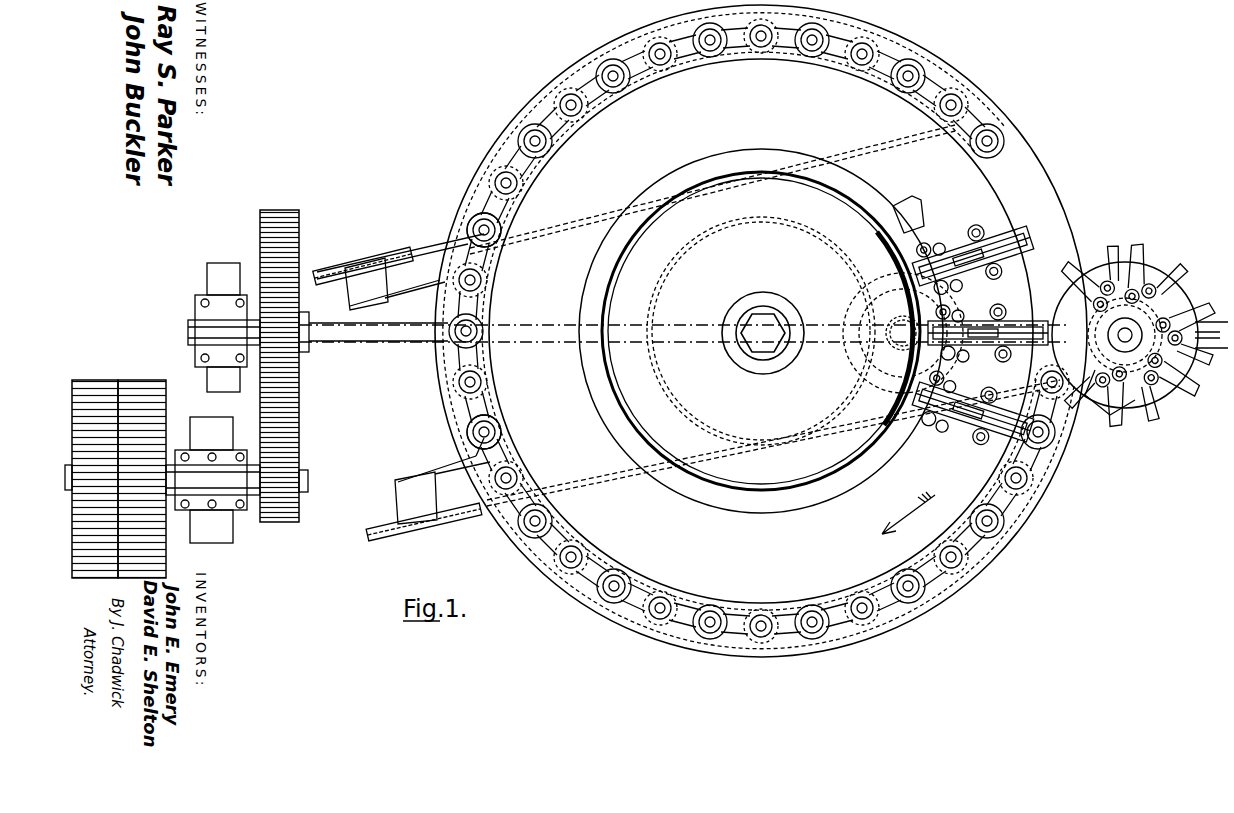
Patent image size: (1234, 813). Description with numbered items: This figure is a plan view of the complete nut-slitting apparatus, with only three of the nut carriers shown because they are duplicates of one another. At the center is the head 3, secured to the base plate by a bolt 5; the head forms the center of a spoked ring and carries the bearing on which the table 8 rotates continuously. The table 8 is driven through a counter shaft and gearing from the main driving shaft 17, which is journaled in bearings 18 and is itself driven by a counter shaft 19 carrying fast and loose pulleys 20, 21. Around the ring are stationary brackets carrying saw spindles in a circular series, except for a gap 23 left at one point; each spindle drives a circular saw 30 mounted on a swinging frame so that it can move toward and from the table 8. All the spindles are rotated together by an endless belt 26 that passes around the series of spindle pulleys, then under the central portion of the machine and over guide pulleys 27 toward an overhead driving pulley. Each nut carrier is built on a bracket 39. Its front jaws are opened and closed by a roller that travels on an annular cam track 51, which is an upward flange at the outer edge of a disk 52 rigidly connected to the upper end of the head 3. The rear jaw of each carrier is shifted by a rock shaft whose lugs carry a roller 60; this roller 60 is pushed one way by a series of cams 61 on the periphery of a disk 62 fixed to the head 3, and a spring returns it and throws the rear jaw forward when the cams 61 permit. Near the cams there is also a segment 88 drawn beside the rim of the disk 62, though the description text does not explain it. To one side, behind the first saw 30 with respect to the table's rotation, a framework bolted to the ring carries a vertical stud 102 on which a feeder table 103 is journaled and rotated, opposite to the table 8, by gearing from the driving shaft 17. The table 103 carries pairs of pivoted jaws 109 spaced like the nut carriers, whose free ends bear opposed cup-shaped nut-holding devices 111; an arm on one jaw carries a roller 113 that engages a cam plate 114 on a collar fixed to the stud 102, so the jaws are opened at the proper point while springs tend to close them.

The head 3 is at (777, 316).
The bolt 5 is at (765, 350).
The table 8 is at (761, 331).
The driving shaft 17 is at (318, 338).
The bearings 18 is at (198, 320).
The counter shaft 19 is at (257, 480).
The fast pulley 20 is at (96, 382).
The loose pulley 21 is at (141, 382).
The gap 23 is at (988, 282).
The endless belt 26 is at (445, 252).
The guide pulleys 27 is at (345, 268).
The saw 30 is at (998, 146).
The bracket 39 is at (978, 438).
The cam track 51 is at (683, 198).
The disk 52 is at (752, 331).
The roller 60 is at (934, 224).
The cams 61 is at (900, 202).
The disk 62 is at (768, 145).
The cam segment 88 is at (893, 249).
The vertical stud 102 is at (1175, 366).
The table 103 is at (1175, 292).
The pairs of jaws 109 is at (1080, 238).
The nut-holding devices 111 is at (1170, 262).
The roller 113 is at (1146, 326).
The cam plate 114 is at (1128, 420).